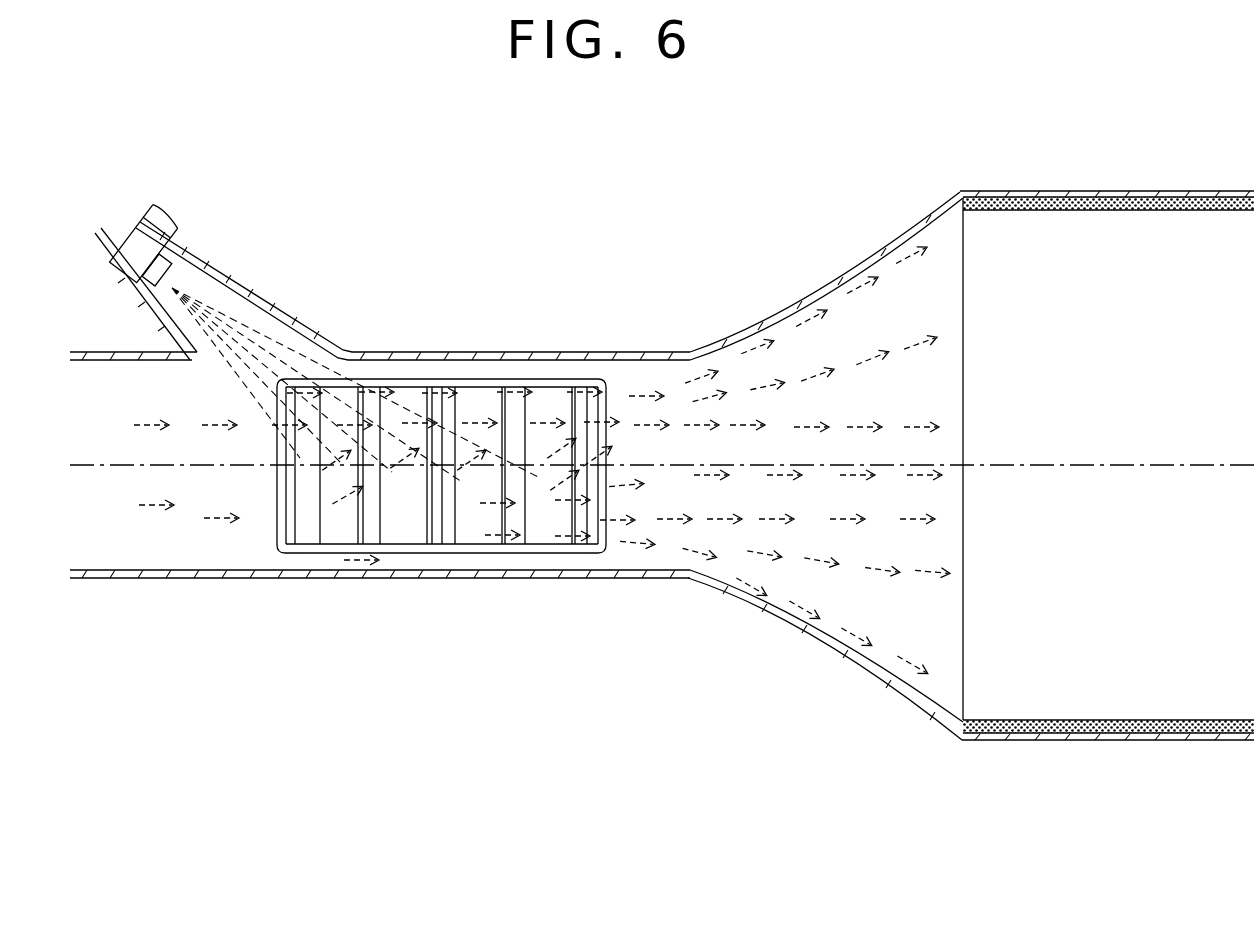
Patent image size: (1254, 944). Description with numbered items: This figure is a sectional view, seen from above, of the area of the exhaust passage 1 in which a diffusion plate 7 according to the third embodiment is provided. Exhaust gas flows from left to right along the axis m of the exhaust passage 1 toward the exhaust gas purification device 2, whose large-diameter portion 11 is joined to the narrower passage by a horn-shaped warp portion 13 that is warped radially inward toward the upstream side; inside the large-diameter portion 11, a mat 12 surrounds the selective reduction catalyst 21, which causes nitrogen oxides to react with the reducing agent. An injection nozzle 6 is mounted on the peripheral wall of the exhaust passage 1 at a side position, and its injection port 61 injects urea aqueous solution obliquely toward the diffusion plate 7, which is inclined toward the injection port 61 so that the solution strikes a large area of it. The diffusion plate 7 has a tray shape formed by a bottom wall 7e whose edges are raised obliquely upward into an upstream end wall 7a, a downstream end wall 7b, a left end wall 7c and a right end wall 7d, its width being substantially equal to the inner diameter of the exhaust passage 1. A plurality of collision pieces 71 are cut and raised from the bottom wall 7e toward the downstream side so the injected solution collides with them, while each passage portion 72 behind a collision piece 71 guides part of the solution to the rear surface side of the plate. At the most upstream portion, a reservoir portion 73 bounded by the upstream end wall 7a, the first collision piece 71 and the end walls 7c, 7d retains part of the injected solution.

The exhaust passage 1 is at (612, 352).
The exhaust gas purification device 2 is at (1052, 734).
The injection nozzle 6 is at (158, 226).
The diffusion plate 7 is at (433, 458).
The upstream end wall 7a is at (275, 522).
The downstream end wall 7b is at (612, 552).
The left end wall 7c is at (495, 535).
The right end wall 7d is at (512, 396).
The bottom wall 7e is at (449, 400).
The large-diameter portion 11 is at (1025, 191).
The mat 12 is at (1125, 197).
The warp portion 13 is at (890, 248).
The selective reduction catalyst 21 is at (1163, 706).
The injection port 61 is at (172, 275).
The collision piece 71 is at (348, 527).
The passage portion 72 is at (352, 396).
The reservoir portion 73 is at (310, 527).
The axis m is at (1062, 466).